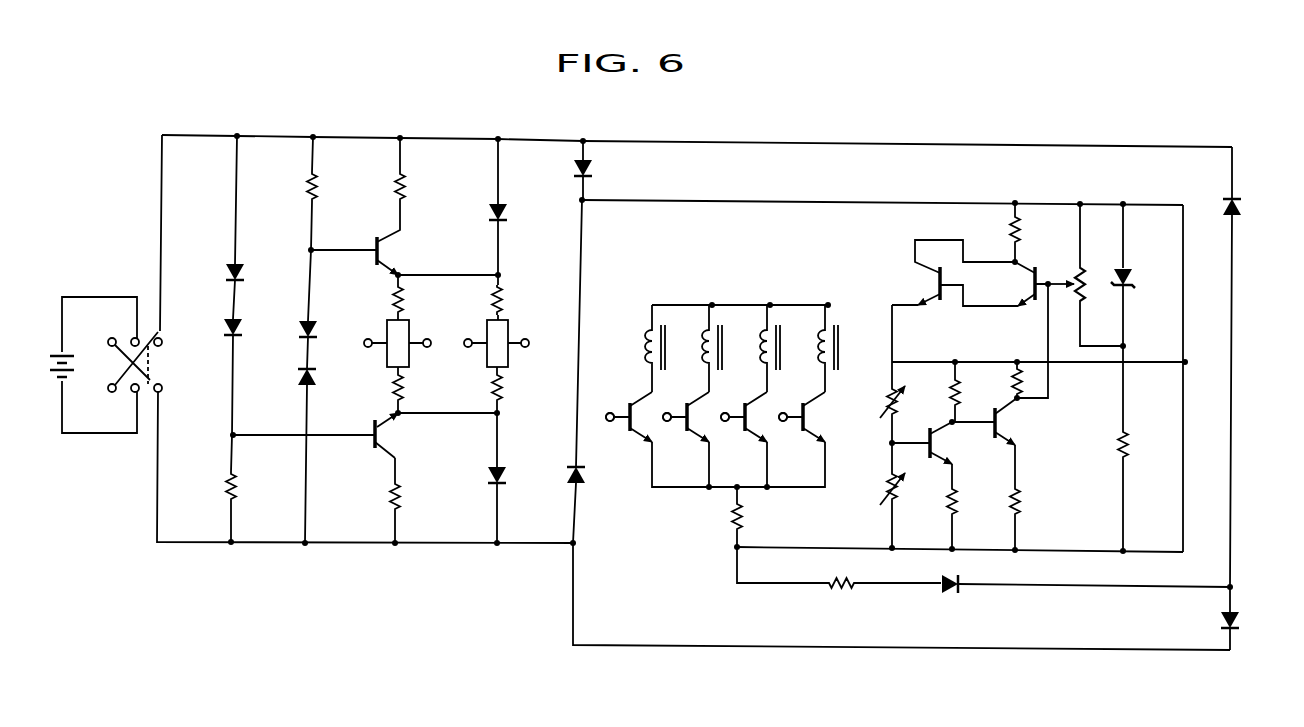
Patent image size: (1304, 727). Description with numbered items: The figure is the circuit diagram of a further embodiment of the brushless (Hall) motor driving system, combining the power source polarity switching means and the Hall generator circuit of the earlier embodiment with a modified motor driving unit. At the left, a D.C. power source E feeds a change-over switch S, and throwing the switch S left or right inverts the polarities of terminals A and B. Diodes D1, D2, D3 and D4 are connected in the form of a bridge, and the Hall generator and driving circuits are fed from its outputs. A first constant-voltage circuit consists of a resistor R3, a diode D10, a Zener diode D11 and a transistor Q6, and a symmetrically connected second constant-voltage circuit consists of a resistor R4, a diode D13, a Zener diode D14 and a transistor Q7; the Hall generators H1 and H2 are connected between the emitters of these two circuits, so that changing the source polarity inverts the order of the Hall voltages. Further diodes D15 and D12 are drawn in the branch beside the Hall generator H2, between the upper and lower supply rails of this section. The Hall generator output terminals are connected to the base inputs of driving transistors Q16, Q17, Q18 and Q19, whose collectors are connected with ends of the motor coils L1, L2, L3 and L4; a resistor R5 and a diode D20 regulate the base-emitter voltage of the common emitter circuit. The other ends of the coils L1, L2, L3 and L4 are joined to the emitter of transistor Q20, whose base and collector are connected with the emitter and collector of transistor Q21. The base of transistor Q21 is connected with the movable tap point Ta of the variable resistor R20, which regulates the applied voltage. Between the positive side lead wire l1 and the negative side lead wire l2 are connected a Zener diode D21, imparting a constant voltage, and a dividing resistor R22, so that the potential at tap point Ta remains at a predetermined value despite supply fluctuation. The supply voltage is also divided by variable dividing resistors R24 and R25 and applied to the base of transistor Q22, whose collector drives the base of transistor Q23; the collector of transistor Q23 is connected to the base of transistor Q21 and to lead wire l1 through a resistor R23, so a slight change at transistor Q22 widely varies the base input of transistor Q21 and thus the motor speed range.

The D.C. power source E is at (72, 354).
The change-over switch S is at (127, 382).
The terminal A is at (167, 330).
The terminal B is at (167, 401).
The diode D1 is at (592, 168).
The diode D2 is at (573, 465).
The diode D3 is at (1243, 207).
The diode D4 is at (1221, 619).
The diode D10 is at (313, 324).
The Zener diode D11 is at (318, 380).
The diode D12 is at (488, 476).
The diode D13 is at (241, 332).
The Zener diode D14 is at (244, 276).
The diode D15 is at (507, 213).
The diode D20 is at (957, 607).
The Zener diode D21 is at (1126, 290).
The resistor R3 is at (320, 190).
The resistor R4 is at (238, 488).
The resistor R5 is at (842, 589).
The variable resistor R20 is at (1084, 270).
The dividing resistor R22 is at (1114, 446).
The resistor R23 is at (1013, 395).
The variable dividing resistor R24 is at (889, 401).
The variable dividing resistor R25 is at (888, 486).
The transistor Q6 is at (385, 252).
The transistor Q7 is at (384, 437).
The driving transistor Q16 is at (656, 444).
The driving transistor Q17 is at (713, 444).
The driving transistor Q18 is at (771, 444).
The driving transistor Q19 is at (808, 417).
The transistor Q20 is at (928, 287).
The transistor Q21 is at (1030, 290).
The transistor Q22 is at (944, 449).
The transistor Q23 is at (1002, 426).
The Hall generator H1 is at (412, 320).
The Hall generator H2 is at (511, 320).
The field coil L1 is at (665, 332).
The field coil L2 is at (722, 332).
The field coil L3 is at (780, 332).
The field coil L4 is at (838, 332).
The movable tap point Ta is at (1050, 290).
The positive side lead wire l1 is at (830, 201).
The negative side lead wire l2 is at (1145, 552).